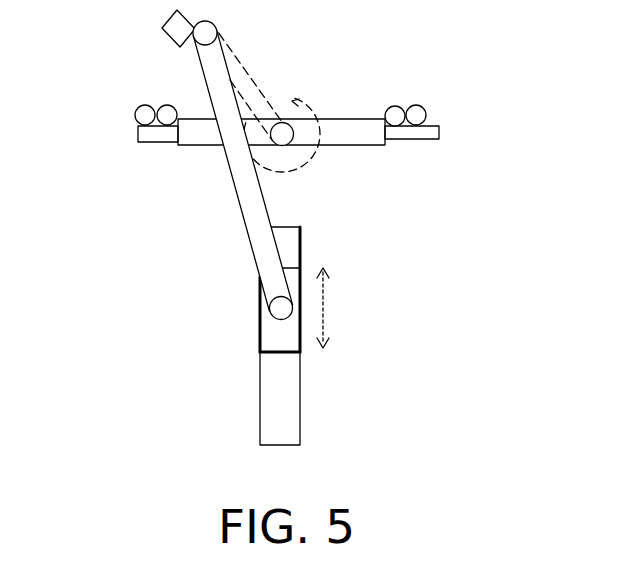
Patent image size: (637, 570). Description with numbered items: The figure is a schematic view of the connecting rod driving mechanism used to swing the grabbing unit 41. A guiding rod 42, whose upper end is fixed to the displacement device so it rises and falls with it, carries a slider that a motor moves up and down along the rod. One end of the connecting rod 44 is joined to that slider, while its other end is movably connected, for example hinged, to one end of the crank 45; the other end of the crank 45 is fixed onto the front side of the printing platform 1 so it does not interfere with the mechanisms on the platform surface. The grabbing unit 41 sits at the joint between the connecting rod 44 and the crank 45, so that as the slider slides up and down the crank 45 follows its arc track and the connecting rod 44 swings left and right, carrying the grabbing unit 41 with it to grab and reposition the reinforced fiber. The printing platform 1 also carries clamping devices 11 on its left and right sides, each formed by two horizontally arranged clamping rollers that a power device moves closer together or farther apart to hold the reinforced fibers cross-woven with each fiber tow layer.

The printing platform 1 is at (202, 145).
The clamping device 11 is at (407, 98).
The grabbing unit 41 is at (152, 40).
The guiding rod 42 is at (262, 335).
The connecting rod 44 is at (238, 213).
The crank 45 is at (248, 58).